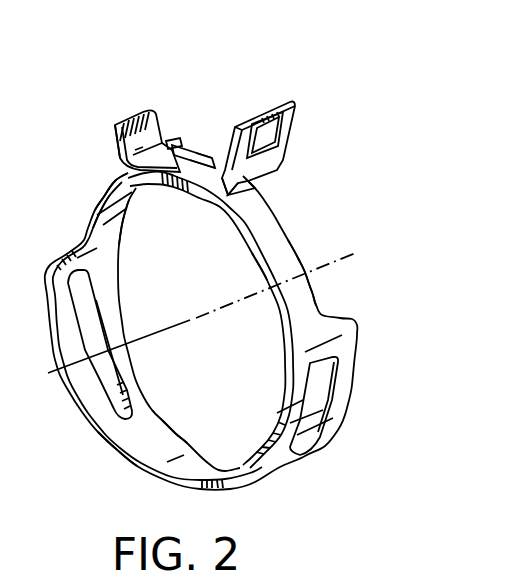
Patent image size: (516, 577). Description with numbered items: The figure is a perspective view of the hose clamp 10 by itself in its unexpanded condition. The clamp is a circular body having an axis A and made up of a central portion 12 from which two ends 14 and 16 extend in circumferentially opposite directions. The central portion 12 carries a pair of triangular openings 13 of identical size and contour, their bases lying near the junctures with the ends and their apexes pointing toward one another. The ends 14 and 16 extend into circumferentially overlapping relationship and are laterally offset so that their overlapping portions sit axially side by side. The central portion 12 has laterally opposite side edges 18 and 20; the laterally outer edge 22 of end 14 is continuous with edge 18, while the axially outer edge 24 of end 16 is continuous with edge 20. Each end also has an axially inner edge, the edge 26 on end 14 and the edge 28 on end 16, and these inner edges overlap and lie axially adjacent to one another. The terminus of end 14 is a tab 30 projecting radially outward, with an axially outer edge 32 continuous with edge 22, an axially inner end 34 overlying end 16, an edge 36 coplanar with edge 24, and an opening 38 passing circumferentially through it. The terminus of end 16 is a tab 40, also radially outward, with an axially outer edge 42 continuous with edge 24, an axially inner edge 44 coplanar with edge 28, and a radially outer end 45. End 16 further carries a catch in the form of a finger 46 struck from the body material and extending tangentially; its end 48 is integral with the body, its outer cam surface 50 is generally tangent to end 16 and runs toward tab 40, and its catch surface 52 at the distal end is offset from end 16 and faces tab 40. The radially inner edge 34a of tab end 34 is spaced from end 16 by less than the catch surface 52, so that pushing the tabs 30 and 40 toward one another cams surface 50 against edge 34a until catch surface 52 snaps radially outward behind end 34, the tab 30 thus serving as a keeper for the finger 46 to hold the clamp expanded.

The hose clamp 10 is at (363, 455).
The central portion 12 is at (276, 477).
The triangular openings 13 is at (82, 312).
The end 14 is at (88, 181).
The end 16 is at (330, 287).
The side edge 18 is at (179, 428).
The side edge 20 is at (130, 462).
The laterally outer edge 22 is at (126, 225).
The axially outer edge 24 is at (258, 262).
The axially inner edge 26 is at (97, 212).
The axially inner edge 28 is at (303, 258).
The tab 30 is at (315, 95).
The axially outer edge 32 is at (295, 137).
The axially inner end 34 is at (273, 182).
The radially inner edge 34a is at (236, 200).
The edge 36 is at (207, 178).
The opening 38 is at (265, 150).
The tab 40 is at (106, 111).
The axially outer edge 42 is at (113, 142).
The axially inner edge 44 is at (162, 112).
The radially outer end 45 is at (133, 100).
The finger 46 is at (190, 131).
The end 48 is at (197, 156).
The outer cam surface 50 is at (147, 181).
The catch surface 52 is at (172, 141).
The axis A is at (192, 320).